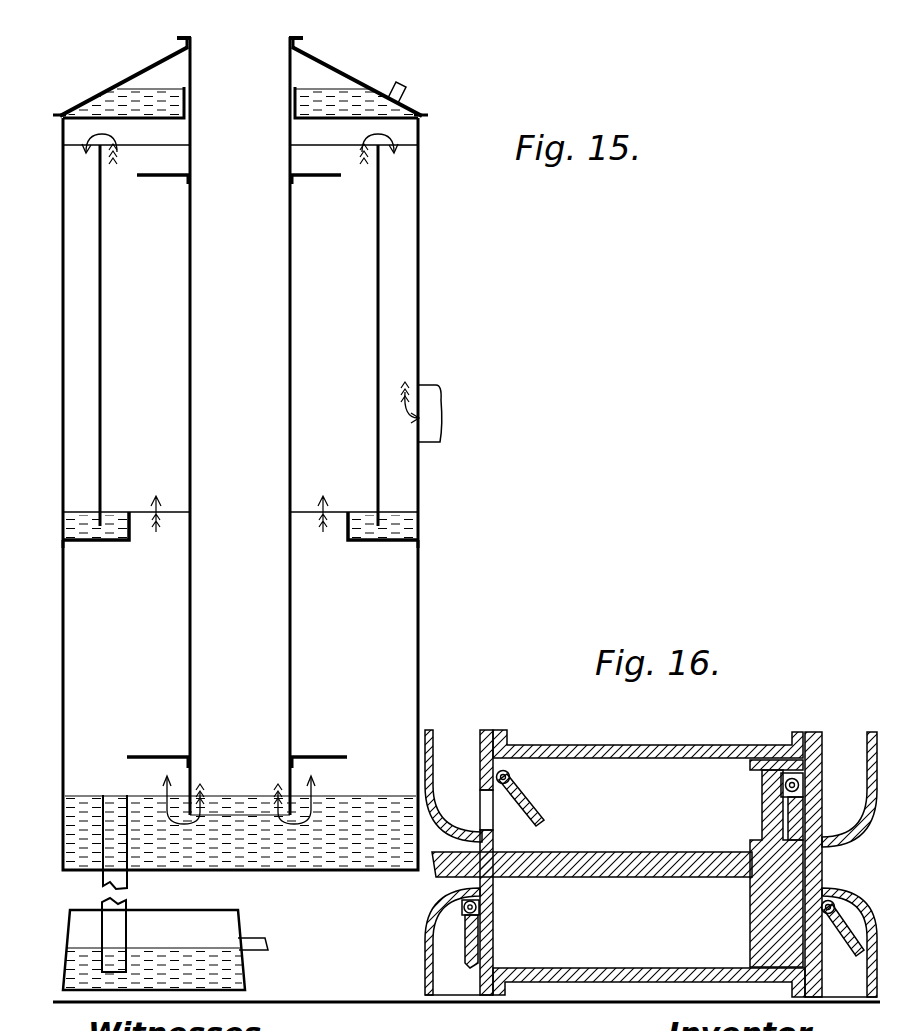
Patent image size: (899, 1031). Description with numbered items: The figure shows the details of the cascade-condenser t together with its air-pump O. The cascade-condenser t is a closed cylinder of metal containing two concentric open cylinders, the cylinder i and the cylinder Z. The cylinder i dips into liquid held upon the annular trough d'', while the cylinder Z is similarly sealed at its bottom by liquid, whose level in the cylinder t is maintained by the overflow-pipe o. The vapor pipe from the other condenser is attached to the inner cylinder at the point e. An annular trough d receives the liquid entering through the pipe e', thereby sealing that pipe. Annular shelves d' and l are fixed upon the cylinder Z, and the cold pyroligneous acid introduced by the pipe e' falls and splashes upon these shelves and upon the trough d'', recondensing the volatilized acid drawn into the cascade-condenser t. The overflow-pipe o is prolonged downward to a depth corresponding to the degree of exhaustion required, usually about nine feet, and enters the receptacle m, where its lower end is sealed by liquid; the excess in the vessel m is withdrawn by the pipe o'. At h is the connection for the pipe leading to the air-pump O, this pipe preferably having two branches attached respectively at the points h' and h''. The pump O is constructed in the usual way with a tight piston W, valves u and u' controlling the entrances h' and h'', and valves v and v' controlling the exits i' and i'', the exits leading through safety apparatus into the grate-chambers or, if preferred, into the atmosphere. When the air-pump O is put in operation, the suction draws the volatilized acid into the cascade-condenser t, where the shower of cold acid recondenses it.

In FIG. 15, the cascade-condenser t is at (245, 458).
In FIG. 15, the inner cylinder Z is at (240, 426).
In FIG. 15, the attachment point e is at (240, 25).
In FIG. 15, the pipe e' is at (401, 83).
In FIG. 15, the annular trough d is at (240, 115).
In FIG. 15, the annular shelf d' is at (239, 189).
In FIG. 15, the annular trough d'' is at (240, 541).
In FIG. 15, the open cylinder i is at (104, 335).
In FIG. 15, the exit i' is at (370, 335).
In FIG. 16, the exit i' is at (459, 942).
In FIG. 15, the connection h is at (427, 412).
In FIG. 15, the annular shelf l is at (237, 749).
In FIG. 15, the overflow-pipe o is at (115, 842).
In FIG. 15, the pipe o' is at (241, 939).
In FIG. 15, the receptacle m is at (154, 940).
In FIG. 16, the air-pump O is at (651, 855).
In FIG. 16, the piston W is at (618, 924).
In FIG. 16, the entrance h' is at (453, 773).
In FIG. 16, the entrance h'' is at (849, 776).
In FIG. 16, the exit i'' is at (841, 942).
In FIG. 16, the valve u is at (521, 799).
In FIG. 16, the valve u' is at (801, 806).
In FIG. 16, the valve v is at (461, 934).
In FIG. 16, the valve v' is at (843, 930).